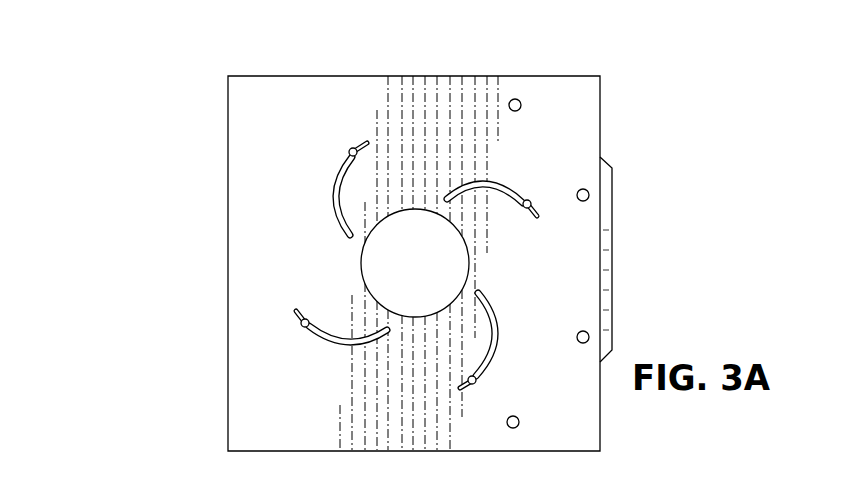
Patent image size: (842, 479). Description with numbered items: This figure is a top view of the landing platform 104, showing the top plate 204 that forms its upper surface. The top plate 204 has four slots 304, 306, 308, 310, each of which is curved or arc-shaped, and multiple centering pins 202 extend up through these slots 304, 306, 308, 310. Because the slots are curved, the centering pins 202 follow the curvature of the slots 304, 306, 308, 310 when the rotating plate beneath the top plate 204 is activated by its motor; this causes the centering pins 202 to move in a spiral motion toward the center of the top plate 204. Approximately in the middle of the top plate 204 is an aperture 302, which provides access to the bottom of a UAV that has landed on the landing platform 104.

The landing platform 104 is at (144, 95).
The centering pins 202 is at (349, 153).
The top plate 204 is at (437, 108).
The aperture 302 is at (434, 274).
The slot 304 is at (509, 186).
The slot 306 is at (497, 333).
The slot 308 is at (334, 347).
The slot 310 is at (334, 211).